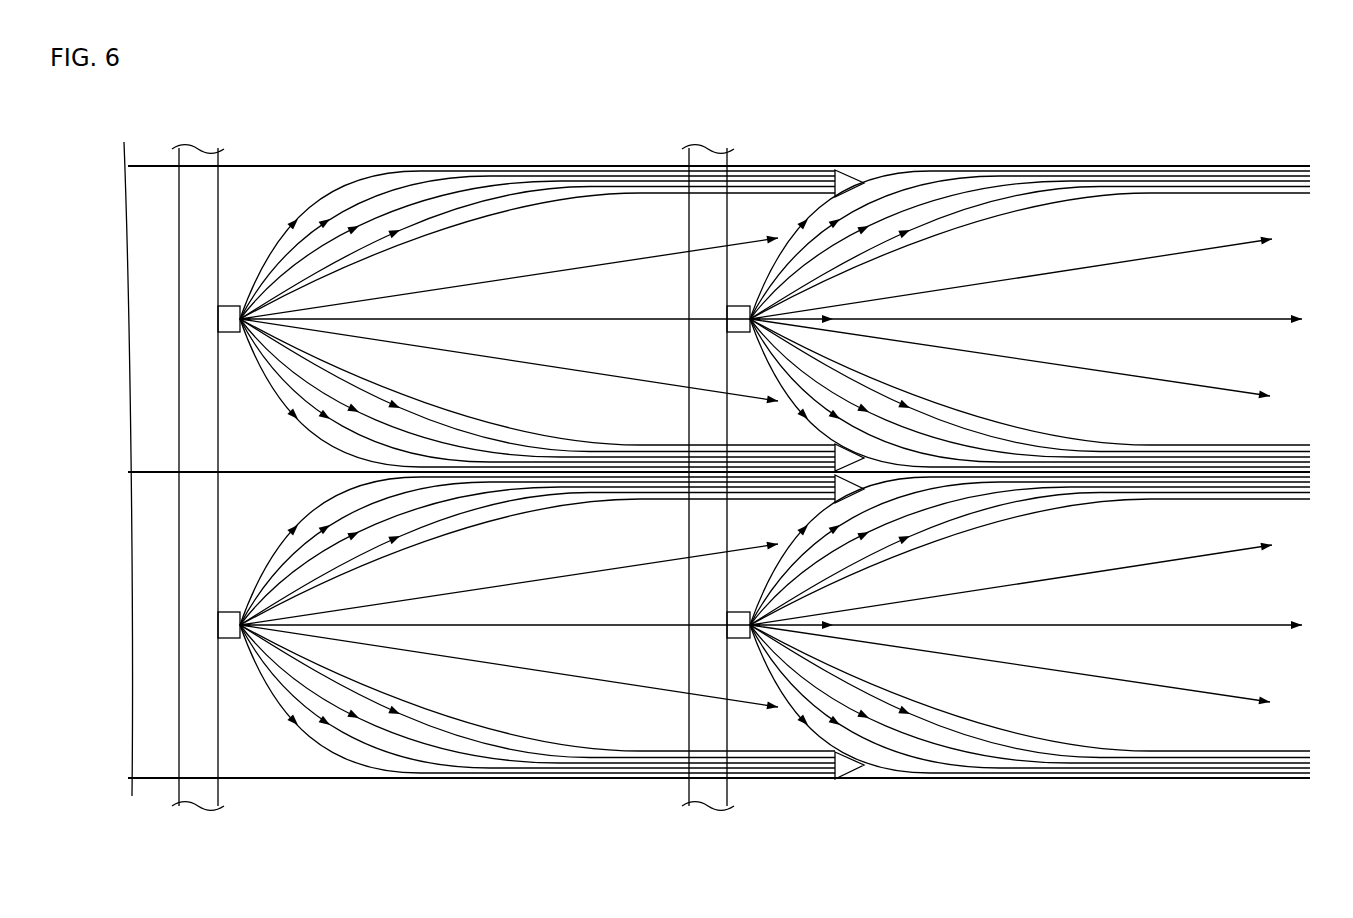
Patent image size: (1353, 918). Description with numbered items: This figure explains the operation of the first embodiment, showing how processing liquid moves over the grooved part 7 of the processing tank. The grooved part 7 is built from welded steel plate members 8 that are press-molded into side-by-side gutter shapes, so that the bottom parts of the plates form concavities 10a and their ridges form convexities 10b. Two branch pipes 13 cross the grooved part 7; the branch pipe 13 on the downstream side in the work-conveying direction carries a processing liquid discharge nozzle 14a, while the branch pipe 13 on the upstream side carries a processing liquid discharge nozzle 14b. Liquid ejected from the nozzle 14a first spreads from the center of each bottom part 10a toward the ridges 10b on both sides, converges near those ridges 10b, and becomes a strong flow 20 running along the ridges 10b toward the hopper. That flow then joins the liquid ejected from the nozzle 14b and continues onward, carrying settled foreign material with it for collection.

The grooved part 7 is at (533, 153).
The steel plate member 8 is at (635, 225).
The branch pipe 13 is at (218, 152).
The processing liquid discharge nozzle 14a is at (230, 303).
The processing liquid discharge nozzle 14b is at (738, 304).
The concavity 10a is at (566, 328).
The convexity 10b is at (345, 166).
The strong flow 20 is at (813, 178).